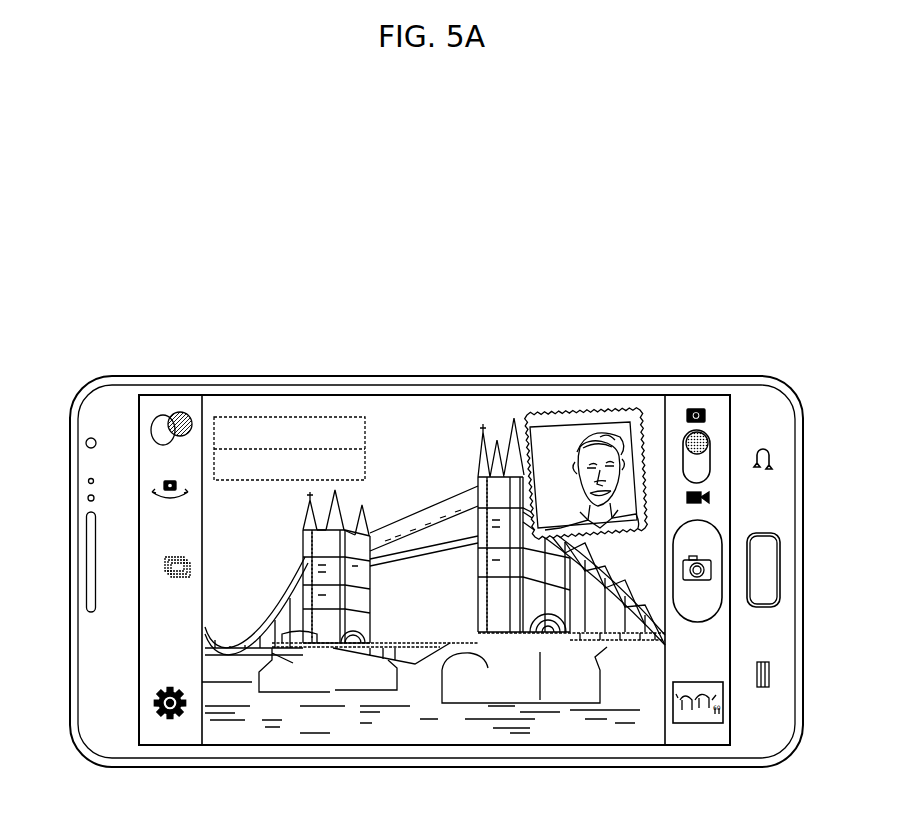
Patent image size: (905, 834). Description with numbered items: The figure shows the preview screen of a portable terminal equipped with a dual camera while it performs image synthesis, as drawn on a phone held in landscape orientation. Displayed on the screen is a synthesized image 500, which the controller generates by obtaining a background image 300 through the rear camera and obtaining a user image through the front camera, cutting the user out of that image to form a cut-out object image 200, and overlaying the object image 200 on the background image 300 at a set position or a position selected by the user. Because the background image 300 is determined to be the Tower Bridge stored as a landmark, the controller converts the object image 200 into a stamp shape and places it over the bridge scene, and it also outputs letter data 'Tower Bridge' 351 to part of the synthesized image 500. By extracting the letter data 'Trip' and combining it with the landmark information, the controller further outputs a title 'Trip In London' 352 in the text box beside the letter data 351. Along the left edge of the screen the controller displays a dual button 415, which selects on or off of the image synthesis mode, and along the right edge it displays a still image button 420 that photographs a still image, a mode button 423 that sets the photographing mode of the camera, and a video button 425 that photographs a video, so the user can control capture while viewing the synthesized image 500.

The cut-out object image 200 is at (606, 435).
The background image 300 is at (418, 433).
The letter data 'Tower Bridge' 351 is at (301, 405).
The title 'Trip In London' 352 is at (237, 415).
The dual button 415 is at (167, 410).
The still image button 420 is at (687, 408).
The mode button 423 is at (701, 440).
The video button 425 is at (706, 497).
The synthesized image 500 is at (498, 495).